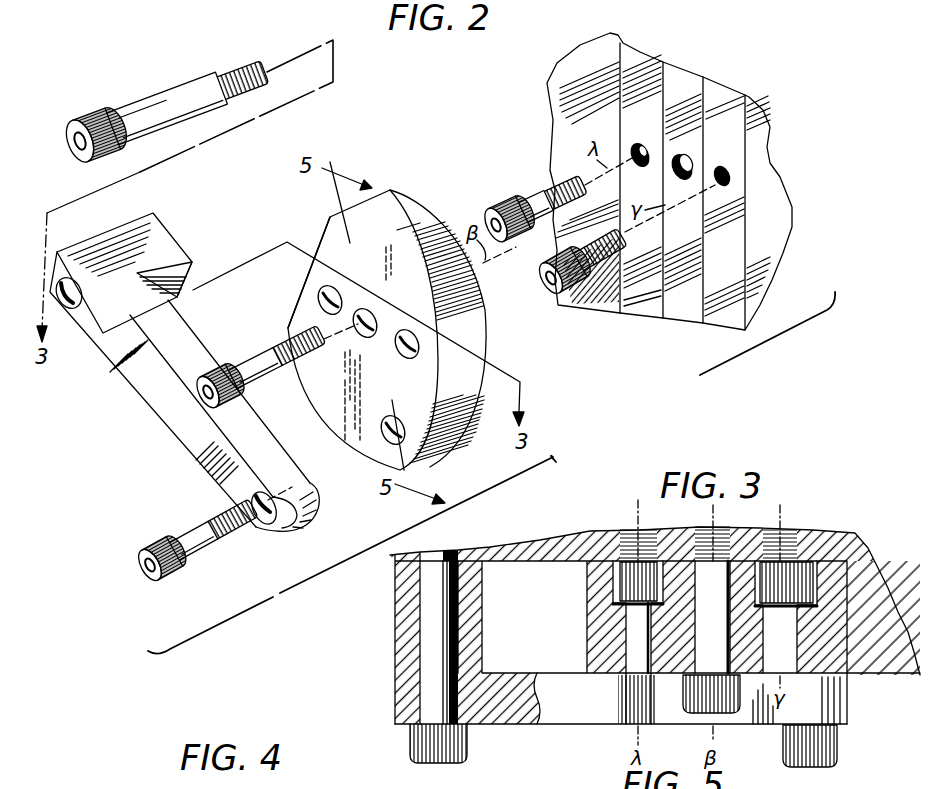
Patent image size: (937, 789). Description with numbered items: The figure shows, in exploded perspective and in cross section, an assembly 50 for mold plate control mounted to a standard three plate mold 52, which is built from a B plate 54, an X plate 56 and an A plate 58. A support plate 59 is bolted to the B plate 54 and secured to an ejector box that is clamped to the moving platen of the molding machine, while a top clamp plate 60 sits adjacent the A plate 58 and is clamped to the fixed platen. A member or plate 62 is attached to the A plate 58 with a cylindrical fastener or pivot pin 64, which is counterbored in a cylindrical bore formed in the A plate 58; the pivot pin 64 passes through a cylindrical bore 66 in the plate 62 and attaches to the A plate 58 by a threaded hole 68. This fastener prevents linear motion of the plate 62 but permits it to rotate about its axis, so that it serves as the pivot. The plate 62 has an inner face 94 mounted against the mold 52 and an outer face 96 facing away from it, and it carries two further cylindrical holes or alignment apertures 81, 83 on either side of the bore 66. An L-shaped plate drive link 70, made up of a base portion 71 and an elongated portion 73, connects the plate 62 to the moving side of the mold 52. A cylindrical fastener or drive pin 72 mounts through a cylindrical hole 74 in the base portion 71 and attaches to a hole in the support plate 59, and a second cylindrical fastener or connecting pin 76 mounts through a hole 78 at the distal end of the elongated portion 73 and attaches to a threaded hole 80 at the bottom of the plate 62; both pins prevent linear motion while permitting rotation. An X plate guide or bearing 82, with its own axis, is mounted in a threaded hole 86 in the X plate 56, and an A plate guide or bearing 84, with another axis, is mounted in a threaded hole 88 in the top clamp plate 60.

In FIG. 2, the assembly 50 is at (491, 473).
In FIG. 2, the three plate mold 52 is at (671, 200).
In FIG. 2, the B plate 54 is at (608, 312).
In FIG. 2, the X plate 56 is at (647, 318).
In FIG. 2, the A plate 58 is at (683, 316).
In FIG. 2, the support plate 59 is at (548, 91).
In FIG. 2, the top clamp plate 60 is at (750, 316).
In FIG. 2, the plate 62 is at (365, 328).
In FIG. 2, the pivot pin 64 is at (270, 380).
In FIG. 3, the pivot pin 64 is at (703, 600).
In FIG. 2, the cylindrical bore 66 is at (368, 311).
In FIG. 2, the threaded hole 68 is at (683, 158).
In FIG. 2, the L-shaped plate drive link 70 is at (184, 385).
In FIG. 3, the L-shaped plate drive link 70 is at (584, 720).
In FIG. 2, the base portion 71 is at (170, 243).
In FIG. 2, the drive pin 72 is at (151, 100).
In FIG. 3, the drive pin 72 is at (468, 744).
In FIG. 2, the elongated portion 73 is at (226, 455).
In FIG. 2, the cylindrical hole 74 is at (72, 309).
In FIG. 2, the connecting pin 76 is at (208, 557).
In FIG. 2, the hole 78 is at (268, 524).
In FIG. 2, the threaded hole 80 is at (397, 418).
In FIG. 2, the alignment aperture 81 is at (333, 289).
In FIG. 2, the X plate guide 82 is at (513, 197).
In FIG. 3, the X plate guide 82 is at (627, 580).
In FIG. 2, the alignment aperture 83 is at (406, 331).
In FIG. 2, the A plate guide 84 is at (594, 298).
In FIG. 3, the A plate guide 84 is at (790, 530).
In FIG. 2, the threaded hole 86 is at (640, 145).
In FIG. 2, the threaded hole 88 is at (722, 167).
In FIG. 2, the inner face 94 is at (430, 195).
In FIG. 2, the outer face 96 is at (307, 320).